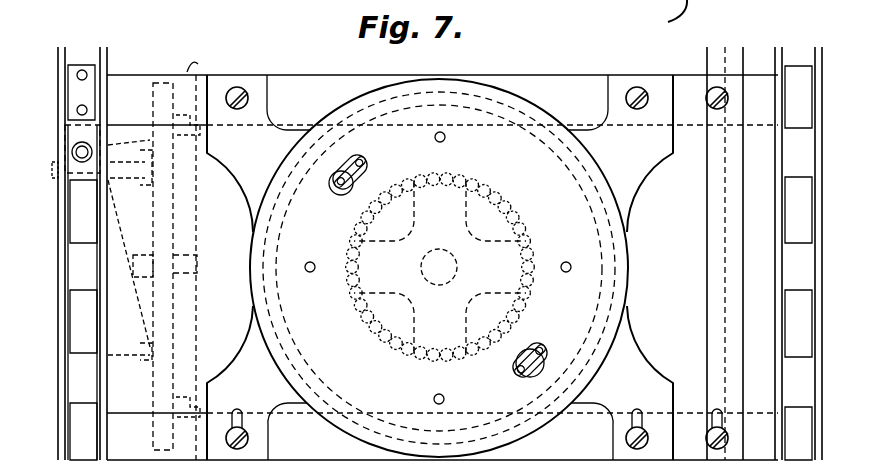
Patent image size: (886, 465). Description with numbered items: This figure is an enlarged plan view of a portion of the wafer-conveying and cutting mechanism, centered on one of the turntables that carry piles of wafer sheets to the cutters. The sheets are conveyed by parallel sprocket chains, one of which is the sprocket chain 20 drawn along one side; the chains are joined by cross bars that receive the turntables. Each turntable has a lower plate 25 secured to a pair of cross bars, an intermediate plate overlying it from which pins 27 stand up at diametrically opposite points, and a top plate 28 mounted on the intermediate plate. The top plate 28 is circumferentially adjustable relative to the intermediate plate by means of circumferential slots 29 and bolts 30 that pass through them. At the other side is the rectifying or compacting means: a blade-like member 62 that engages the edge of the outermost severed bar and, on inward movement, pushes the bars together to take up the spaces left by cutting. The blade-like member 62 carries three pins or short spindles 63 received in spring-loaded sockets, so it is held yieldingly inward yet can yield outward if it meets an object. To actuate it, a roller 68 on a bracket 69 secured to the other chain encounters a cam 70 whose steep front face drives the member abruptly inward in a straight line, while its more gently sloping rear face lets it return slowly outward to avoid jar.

The sprocket chain 20 is at (773, 54).
The lower plate 25 is at (256, 162).
The pin 27 is at (449, 138).
The top plate 28 is at (547, 422).
The circumferential slot 29 is at (362, 168).
The bolt 30 is at (347, 192).
The blade-like member 62 is at (201, 133).
The pin or short spindle 63 is at (198, 262).
The roller 68 is at (90, 165).
The bracket 69 is at (96, 133).
The cam 70 is at (148, 288).